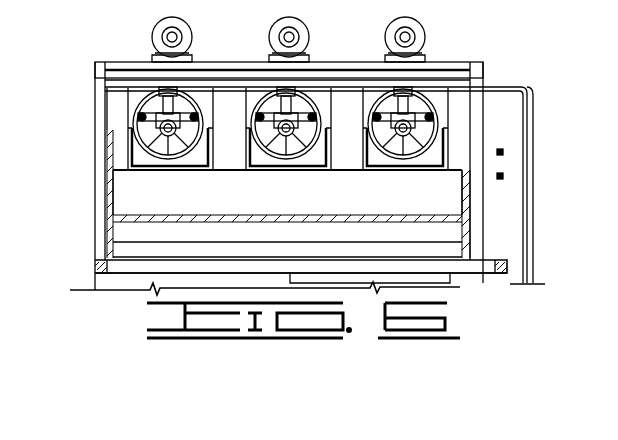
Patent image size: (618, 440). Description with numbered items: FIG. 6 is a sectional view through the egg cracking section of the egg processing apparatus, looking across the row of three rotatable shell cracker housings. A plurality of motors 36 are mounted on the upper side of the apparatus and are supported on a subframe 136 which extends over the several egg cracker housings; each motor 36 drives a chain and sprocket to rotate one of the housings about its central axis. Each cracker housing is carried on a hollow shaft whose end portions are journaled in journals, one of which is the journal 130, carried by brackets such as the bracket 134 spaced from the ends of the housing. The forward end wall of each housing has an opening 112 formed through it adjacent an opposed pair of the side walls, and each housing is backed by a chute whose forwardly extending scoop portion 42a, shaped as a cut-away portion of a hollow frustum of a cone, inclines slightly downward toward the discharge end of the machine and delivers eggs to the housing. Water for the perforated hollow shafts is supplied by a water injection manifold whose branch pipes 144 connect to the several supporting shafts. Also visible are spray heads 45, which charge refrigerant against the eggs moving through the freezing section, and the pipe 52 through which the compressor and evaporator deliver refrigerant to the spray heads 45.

The motors 36 is at (154, 29).
The subframe 136 is at (100, 66).
The bracket 134 is at (105, 86).
The spray heads 45 is at (140, 115).
The pipe 52 is at (229, 93).
The scoop portion 42a is at (170, 168).
The journal 130 is at (290, 160).
The branch pipes 144 is at (388, 156).
The opening 112 is at (400, 156).